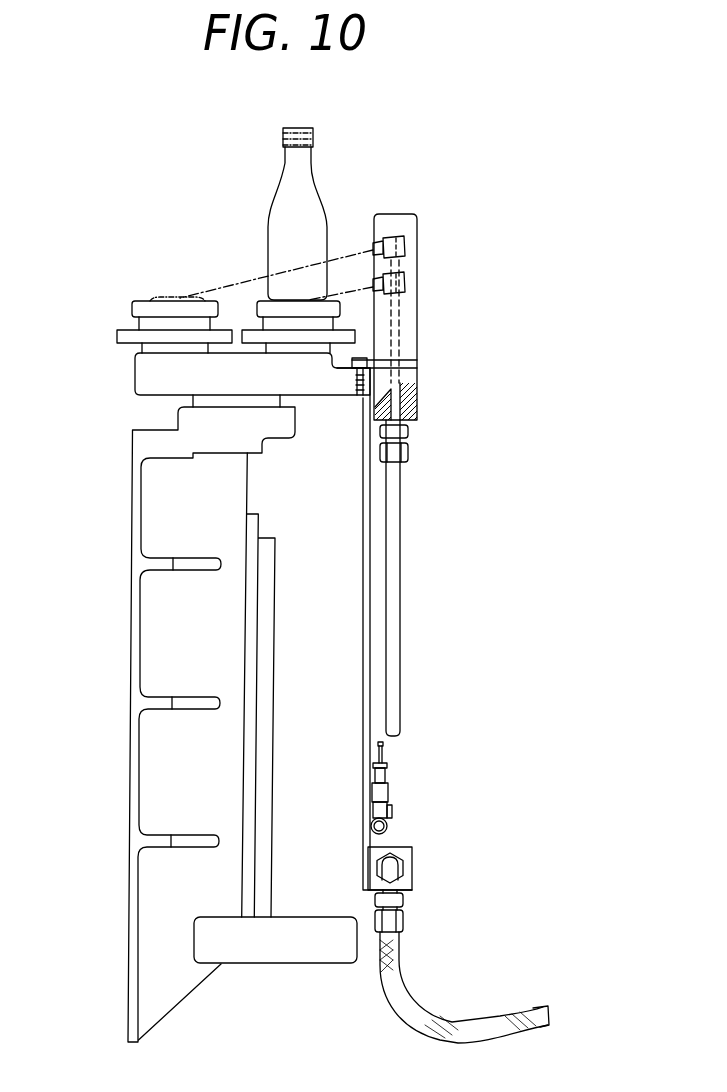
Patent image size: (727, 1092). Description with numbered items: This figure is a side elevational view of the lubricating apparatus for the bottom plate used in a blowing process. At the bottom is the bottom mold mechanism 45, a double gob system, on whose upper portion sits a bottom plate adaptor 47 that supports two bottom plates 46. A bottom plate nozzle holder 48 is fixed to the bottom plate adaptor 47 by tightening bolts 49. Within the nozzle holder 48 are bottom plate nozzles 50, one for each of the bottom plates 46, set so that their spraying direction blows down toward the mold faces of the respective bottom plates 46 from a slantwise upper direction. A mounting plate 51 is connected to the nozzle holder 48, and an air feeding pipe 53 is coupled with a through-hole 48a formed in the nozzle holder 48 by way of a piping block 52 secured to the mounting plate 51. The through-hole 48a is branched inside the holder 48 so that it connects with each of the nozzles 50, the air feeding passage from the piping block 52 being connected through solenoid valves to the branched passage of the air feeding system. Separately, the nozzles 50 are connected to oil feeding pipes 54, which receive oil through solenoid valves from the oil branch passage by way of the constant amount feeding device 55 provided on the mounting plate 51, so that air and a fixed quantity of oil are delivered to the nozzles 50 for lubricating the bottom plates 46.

The bottom mold mechanism 45 is at (105, 485).
The bottom plate 46 is at (140, 303).
The bottom plate adaptor 47 is at (147, 366).
The bottom plate nozzle holder 48 is at (412, 237).
The through-hole 48a is at (402, 327).
The bolt 49 is at (363, 352).
The bottom plate nozzle 50 is at (386, 238).
The mounting plate 51 is at (363, 538).
The piping block 52 is at (413, 870).
The air feeding pipe 53 is at (400, 582).
The oil feeding pipe 54 is at (382, 750).
The constant amount feeding device 55 is at (387, 803).